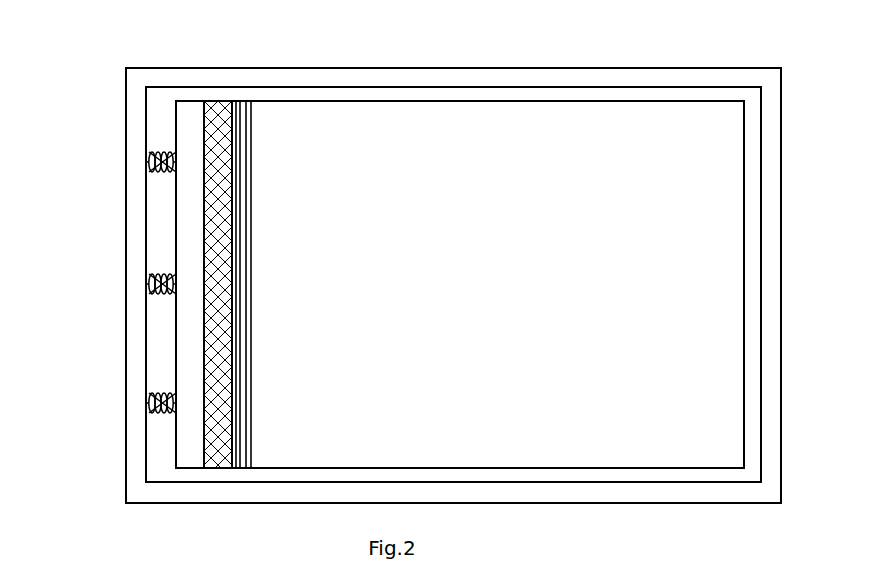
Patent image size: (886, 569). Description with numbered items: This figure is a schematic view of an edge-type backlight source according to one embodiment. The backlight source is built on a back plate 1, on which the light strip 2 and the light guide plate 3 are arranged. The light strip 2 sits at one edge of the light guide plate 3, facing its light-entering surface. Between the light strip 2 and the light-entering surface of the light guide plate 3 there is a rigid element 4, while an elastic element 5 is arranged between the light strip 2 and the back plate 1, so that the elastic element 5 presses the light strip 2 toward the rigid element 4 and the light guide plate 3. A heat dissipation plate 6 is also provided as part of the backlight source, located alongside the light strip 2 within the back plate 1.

The back plate 1 is at (137, 215).
The light strip 2 is at (217, 113).
The light guide plate 3 is at (725, 263).
The rigid element 4 is at (239, 112).
The elastic element 5 is at (146, 162).
The heat dissipation plate 6 is at (189, 115).